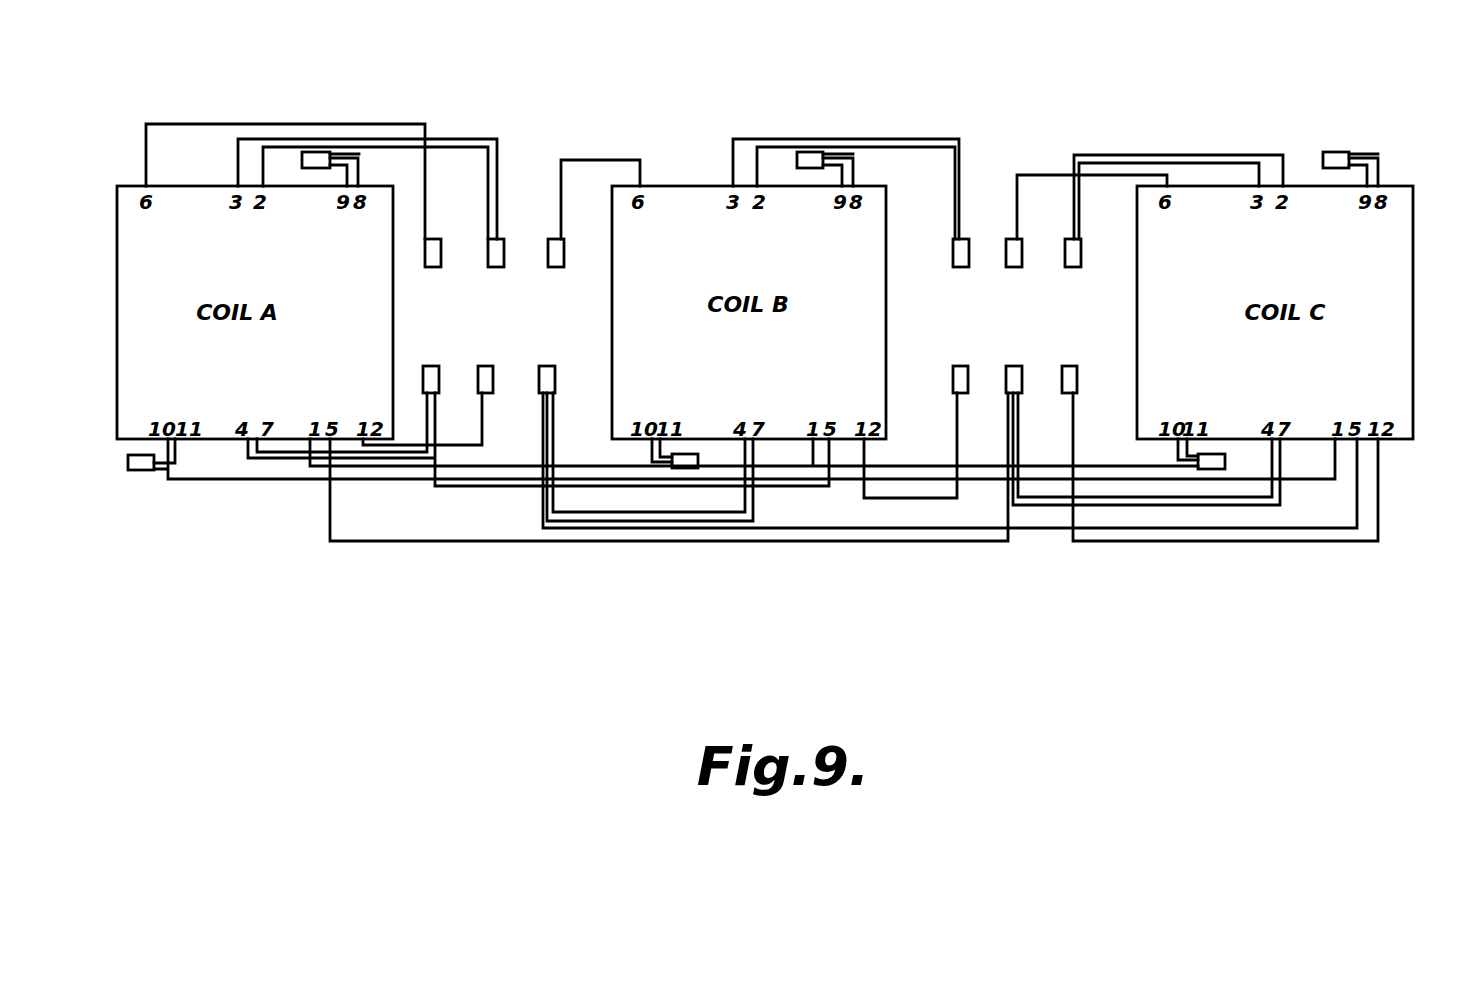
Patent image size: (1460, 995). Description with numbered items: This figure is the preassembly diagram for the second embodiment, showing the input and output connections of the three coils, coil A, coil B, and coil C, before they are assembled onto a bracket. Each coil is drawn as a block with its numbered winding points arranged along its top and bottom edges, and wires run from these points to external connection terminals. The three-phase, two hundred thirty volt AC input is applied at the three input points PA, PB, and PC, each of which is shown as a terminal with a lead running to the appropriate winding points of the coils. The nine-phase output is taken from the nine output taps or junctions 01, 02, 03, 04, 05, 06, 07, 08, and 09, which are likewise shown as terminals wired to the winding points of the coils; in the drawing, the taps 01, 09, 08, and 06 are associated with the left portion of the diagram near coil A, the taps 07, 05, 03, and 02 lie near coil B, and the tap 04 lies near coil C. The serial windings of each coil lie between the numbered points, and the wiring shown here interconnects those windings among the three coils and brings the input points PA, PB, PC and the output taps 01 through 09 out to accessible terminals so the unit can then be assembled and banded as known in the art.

The output tap 01 is at (359, 154).
The output tap 02 is at (1069, 239).
The output tap 03 is at (1012, 239).
The output tap 04 is at (1378, 154).
The output tap 05 is at (963, 239).
The output tap 06 is at (553, 239).
The output tap 07 is at (853, 154).
The output tap 08 is at (502, 239).
The output tap 09 is at (435, 239).
The input point PA is at (489, 393).
The input point PB is at (963, 393).
The input point PC is at (1066, 393).